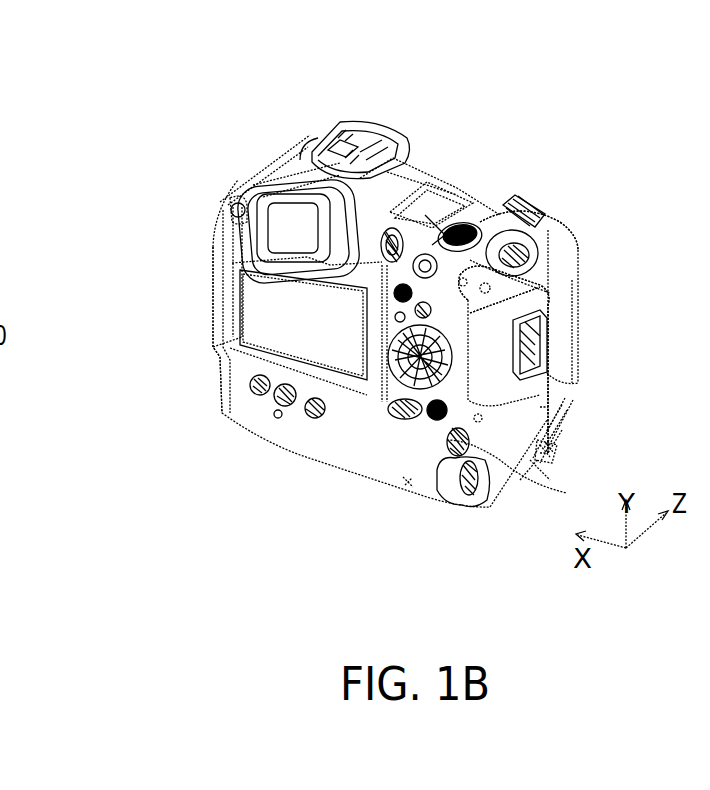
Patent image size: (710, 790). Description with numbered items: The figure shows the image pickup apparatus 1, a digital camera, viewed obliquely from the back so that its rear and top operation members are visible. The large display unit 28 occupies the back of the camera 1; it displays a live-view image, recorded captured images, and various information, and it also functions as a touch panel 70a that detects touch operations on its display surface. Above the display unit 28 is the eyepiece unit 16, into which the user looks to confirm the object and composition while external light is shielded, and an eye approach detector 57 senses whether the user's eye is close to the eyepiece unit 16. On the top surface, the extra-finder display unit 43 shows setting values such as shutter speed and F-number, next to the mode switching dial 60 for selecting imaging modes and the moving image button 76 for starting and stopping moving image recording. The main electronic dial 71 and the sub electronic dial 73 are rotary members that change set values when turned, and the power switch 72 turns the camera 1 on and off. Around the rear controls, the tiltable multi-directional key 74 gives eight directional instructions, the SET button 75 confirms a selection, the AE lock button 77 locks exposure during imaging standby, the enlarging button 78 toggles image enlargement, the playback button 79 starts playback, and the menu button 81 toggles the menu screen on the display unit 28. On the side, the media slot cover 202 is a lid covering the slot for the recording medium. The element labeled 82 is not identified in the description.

The image pickup apparatus 1 is at (568, 97).
The eyepiece unit 16 is at (290, 135).
The display unit 28 is at (203, 325).
The touch panel 70a is at (280, 325).
The extra-finder display unit 43 is at (430, 205).
The eye approach detector 57 is at (215, 240).
The mode switching dial 60 is at (463, 217).
The main electronic dial 71 is at (527, 200).
The power switch 72 is at (390, 414).
The sub electronic dial 73 is at (578, 242).
The multi-directional key 74 is at (413, 150).
The SET button 75 is at (412, 422).
The moving image button 76 is at (392, 152).
The AE lock button 77 is at (555, 290).
The enlarging button 78 is at (257, 413).
The playback button 79 is at (250, 395).
The menu button 81 is at (220, 182).
The power switch 82 is at (430, 240).
The media slot cover 202 is at (578, 385).